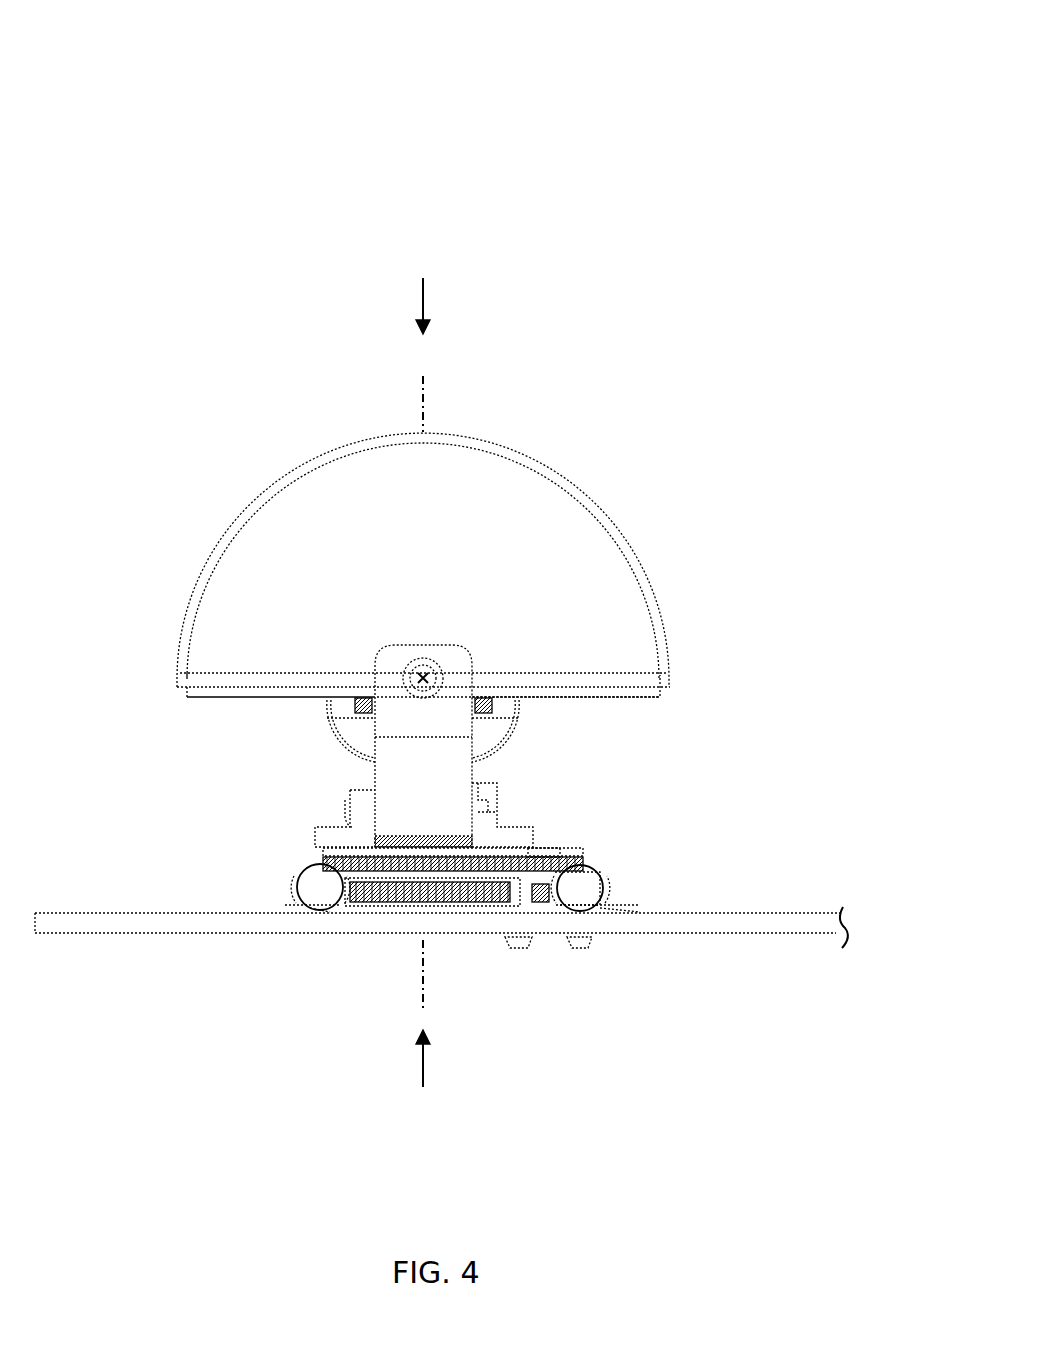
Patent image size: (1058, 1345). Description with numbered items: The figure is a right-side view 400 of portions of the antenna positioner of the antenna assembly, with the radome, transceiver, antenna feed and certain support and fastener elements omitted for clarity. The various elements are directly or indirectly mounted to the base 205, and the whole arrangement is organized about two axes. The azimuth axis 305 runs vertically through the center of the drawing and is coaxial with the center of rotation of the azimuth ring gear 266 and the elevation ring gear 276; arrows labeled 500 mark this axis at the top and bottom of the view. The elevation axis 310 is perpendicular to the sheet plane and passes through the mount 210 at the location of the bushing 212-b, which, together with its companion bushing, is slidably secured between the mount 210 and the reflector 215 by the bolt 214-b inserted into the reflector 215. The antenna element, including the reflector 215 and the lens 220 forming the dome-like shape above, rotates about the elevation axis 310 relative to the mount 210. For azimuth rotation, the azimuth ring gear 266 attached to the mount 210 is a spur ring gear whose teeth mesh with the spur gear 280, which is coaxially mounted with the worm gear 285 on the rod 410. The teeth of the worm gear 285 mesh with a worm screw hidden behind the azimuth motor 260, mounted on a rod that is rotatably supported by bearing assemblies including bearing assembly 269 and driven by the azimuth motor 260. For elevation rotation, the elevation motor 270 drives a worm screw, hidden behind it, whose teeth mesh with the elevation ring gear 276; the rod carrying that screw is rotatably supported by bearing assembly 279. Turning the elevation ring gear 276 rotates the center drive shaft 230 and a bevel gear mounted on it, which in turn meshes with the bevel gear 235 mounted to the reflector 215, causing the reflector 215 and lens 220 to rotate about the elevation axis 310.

The right-side view 400 is at (738, 48).
The direction of movement 500 is at (423, 292).
The azimuth axis 305 is at (423, 375).
The elevation axis 310 is at (412, 668).
The bushing 212-b is at (433, 666).
The bolt 214-b is at (435, 678).
The lens 220 is at (641, 624).
The reflector 215 is at (627, 686).
The bevel gear 235 is at (520, 731).
The center drive shaft 230 is at (362, 790).
The mount 210 is at (497, 833).
The rod 410 is at (550, 858).
The spur gear 280 is at (572, 858).
The azimuth ring gear 266 is at (318, 856).
The elevation motor 270 is at (303, 882).
The bearing assembly 279 is at (300, 905).
The azimuth motor 260 is at (597, 877).
The bearing assembly 269 is at (610, 905).
The base 205 is at (770, 925).
The elevation ring gear 276 is at (360, 912).
The worm gear 285 is at (543, 908).